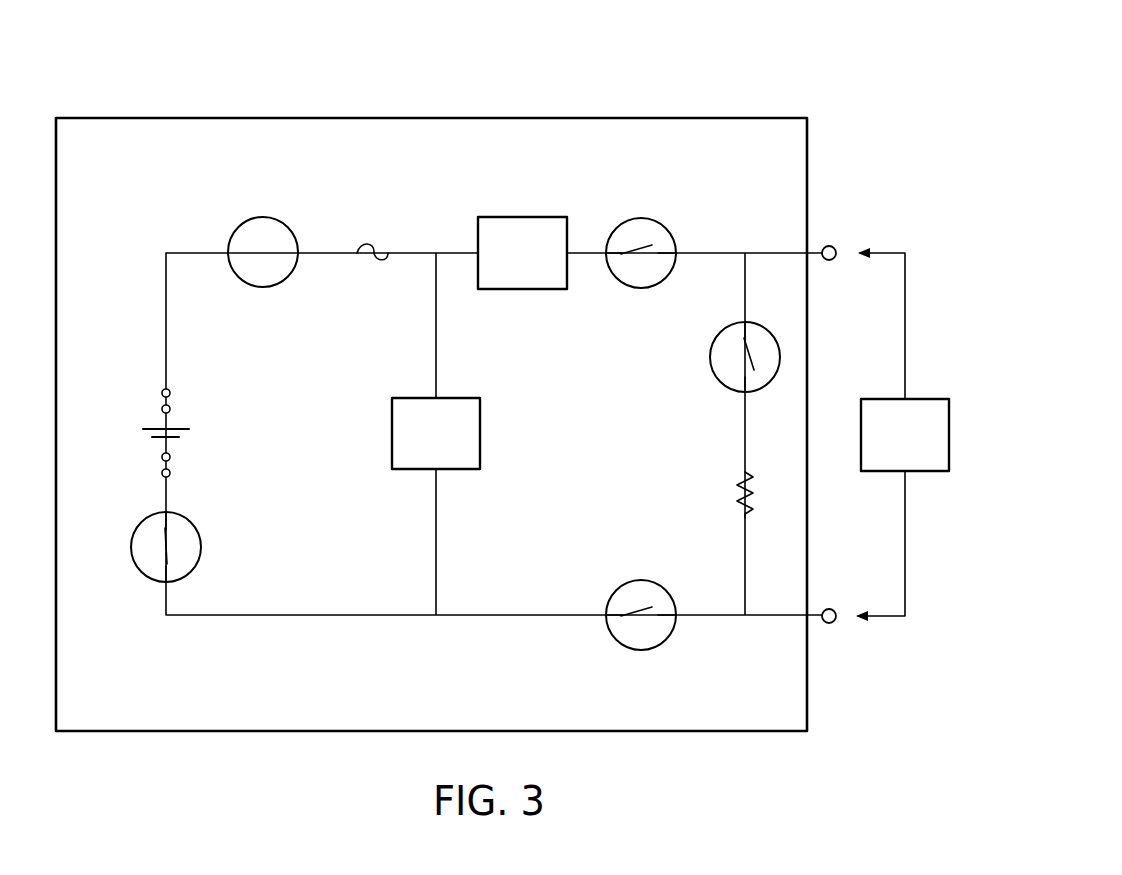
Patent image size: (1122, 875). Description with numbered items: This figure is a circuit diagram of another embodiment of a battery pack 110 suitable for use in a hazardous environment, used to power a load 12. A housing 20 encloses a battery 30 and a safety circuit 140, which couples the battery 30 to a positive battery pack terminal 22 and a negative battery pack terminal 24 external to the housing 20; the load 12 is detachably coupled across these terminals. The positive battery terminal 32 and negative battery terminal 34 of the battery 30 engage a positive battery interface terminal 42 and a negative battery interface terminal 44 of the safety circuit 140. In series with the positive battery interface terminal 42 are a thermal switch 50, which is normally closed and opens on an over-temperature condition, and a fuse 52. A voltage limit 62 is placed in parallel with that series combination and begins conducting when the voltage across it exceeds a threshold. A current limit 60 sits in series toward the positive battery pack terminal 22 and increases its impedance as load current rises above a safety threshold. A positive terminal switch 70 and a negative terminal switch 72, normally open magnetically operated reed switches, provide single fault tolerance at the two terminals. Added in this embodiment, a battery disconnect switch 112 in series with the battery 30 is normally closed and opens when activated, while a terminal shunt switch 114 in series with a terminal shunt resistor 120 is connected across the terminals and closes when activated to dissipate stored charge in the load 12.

The battery pack 110 is at (848, 106).
The safety circuit 140 is at (170, 162).
The housing 20 is at (343, 118).
The thermal switch 50 is at (258, 218).
The fuse 52 is at (370, 250).
The current limit 60 is at (518, 217).
The positive terminal switch 70 is at (642, 218).
The positive battery pack terminal 22 is at (833, 248).
The load 12 is at (934, 399).
The terminal shunt switch 114 is at (712, 354).
The positive battery interface terminal 42 is at (162, 393).
The positive battery terminal 32 is at (170, 409).
The battery 30 is at (143, 430).
The negative battery terminal 34 is at (170, 458).
The negative battery interface terminal 44 is at (162, 473).
The voltage limit 62 is at (480, 432).
The terminal shunt resistor 120 is at (736, 478).
The battery disconnect switch 112 is at (200, 544).
The negative terminal switch 72 is at (638, 581).
The negative battery pack terminal 24 is at (834, 621).